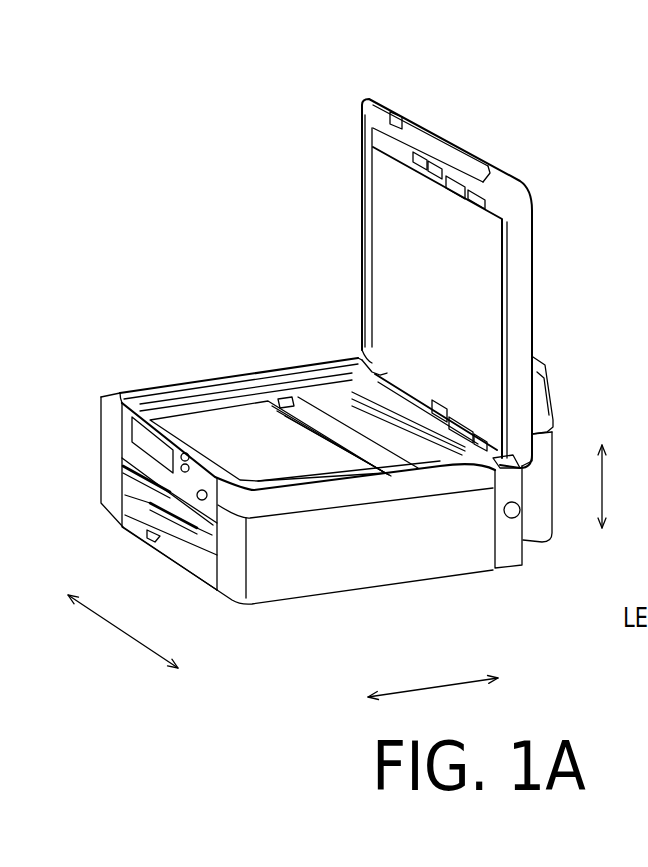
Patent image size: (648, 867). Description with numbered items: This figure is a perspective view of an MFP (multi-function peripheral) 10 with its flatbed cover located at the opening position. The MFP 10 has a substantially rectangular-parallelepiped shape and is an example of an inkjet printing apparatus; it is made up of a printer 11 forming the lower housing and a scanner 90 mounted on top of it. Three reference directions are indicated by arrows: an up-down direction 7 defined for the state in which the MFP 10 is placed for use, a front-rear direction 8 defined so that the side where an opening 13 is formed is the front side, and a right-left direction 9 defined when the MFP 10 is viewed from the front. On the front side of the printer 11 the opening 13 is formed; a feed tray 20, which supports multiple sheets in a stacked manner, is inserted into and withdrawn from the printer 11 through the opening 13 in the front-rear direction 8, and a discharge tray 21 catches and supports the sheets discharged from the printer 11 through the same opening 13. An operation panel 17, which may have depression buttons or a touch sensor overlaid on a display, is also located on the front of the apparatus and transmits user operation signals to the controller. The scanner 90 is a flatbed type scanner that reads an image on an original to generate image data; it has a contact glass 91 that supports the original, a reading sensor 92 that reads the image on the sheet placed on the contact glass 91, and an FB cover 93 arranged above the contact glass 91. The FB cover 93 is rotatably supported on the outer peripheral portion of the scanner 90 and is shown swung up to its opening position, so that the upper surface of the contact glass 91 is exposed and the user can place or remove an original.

The MFP (multi-function peripheral) 10 is at (192, 218).
The printer 11 is at (378, 563).
The opening 13 is at (193, 476).
The operation panel 17 is at (150, 500).
The feed tray 20 is at (200, 562).
The discharge tray 21 is at (185, 530).
The scanner 90 is at (428, 485).
The contact glass 91 is at (270, 437).
The reading sensor 92 is at (221, 393).
The FB (flatbed) cover 93 is at (458, 134).
The up-down direction 7 is at (610, 482).
The front-rear direction 8 is at (433, 680).
The right-left direction 9 is at (121, 636).